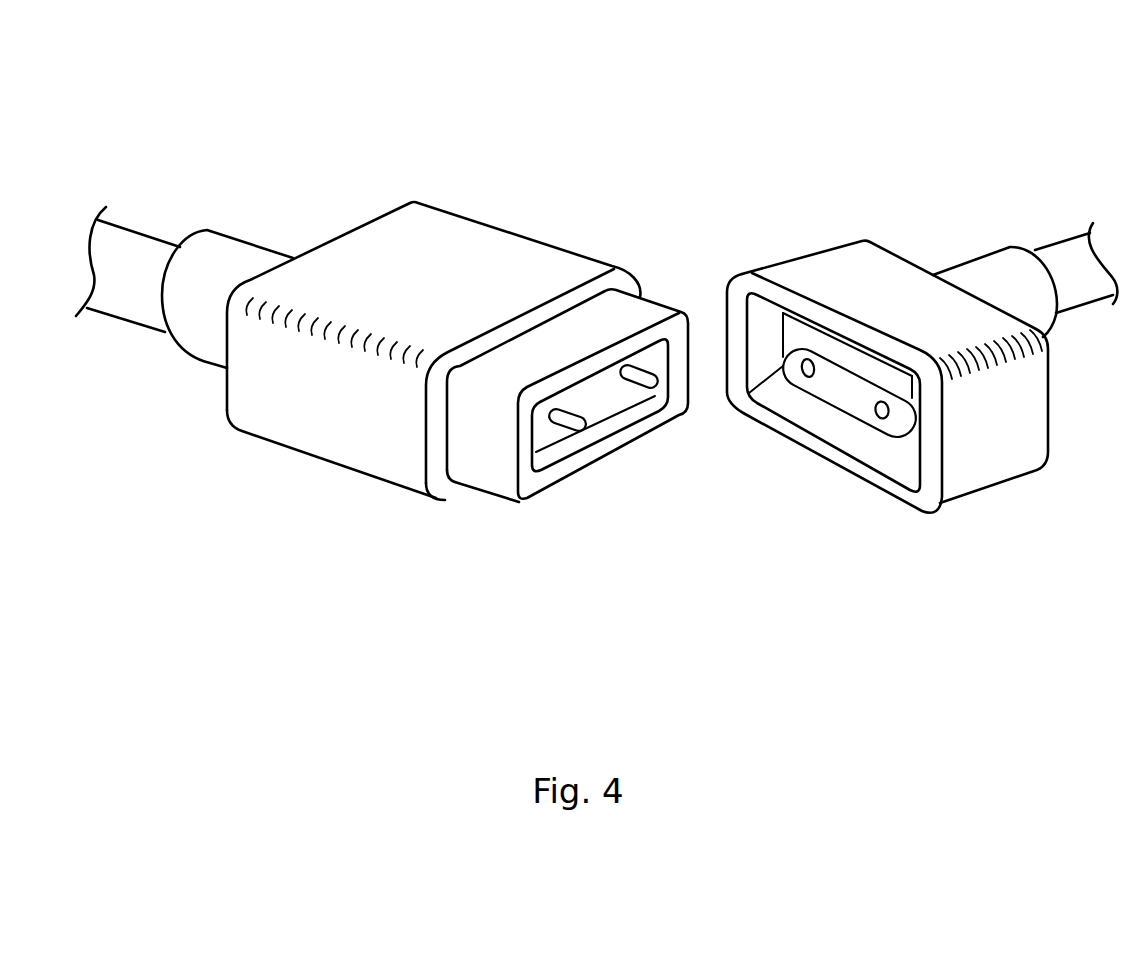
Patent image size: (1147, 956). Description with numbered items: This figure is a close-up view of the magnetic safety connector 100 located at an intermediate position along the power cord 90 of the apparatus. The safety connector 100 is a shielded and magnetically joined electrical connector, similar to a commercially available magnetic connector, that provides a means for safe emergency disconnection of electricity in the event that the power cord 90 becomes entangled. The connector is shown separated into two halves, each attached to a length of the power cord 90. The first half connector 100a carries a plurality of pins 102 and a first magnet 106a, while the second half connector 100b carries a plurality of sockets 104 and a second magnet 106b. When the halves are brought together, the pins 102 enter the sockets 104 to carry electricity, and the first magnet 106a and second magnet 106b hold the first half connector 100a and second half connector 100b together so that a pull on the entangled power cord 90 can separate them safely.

The power cord 90 is at (122, 255).
The safety connector 100 is at (834, 118).
The first half connector 100a is at (393, 230).
The second half connector 100b is at (840, 278).
The pin 102 is at (637, 383).
The socket 104 is at (809, 377).
The first magnet 106a is at (492, 450).
The second magnet 106b is at (808, 347).